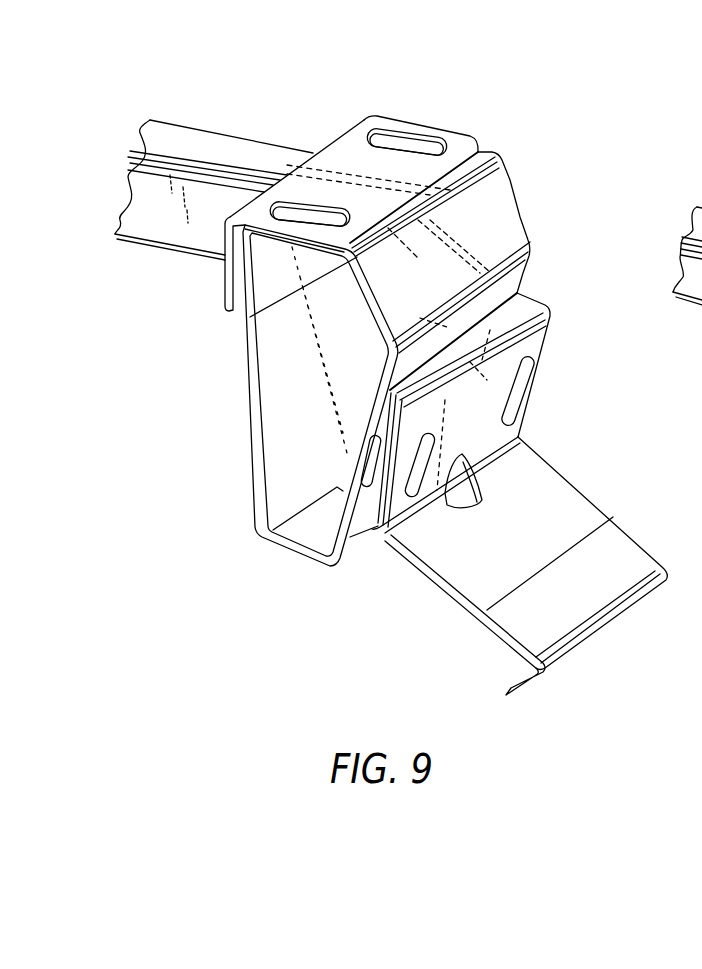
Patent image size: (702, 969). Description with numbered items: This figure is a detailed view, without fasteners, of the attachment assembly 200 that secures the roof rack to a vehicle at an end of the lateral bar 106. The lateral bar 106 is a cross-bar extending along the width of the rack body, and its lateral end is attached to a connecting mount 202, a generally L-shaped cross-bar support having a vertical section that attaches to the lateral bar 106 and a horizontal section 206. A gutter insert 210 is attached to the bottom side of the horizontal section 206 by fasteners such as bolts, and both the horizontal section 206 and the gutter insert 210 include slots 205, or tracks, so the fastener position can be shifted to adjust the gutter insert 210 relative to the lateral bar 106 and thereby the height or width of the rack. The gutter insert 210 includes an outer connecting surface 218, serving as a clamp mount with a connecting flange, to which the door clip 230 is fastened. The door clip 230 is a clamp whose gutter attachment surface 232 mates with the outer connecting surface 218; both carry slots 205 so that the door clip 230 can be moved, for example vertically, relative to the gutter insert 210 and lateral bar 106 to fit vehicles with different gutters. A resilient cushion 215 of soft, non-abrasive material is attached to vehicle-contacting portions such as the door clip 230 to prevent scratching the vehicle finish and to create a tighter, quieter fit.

The lateral bar 106 is at (197, 137).
The attachment assembly 200 is at (566, 84).
The connecting mount 202 is at (328, 160).
The slots 205 is at (283, 203).
The horizontal section 206 is at (380, 123).
The gutter insert 210 is at (521, 176).
The cushion 215 is at (353, 543).
The outer connecting surface 218 is at (518, 270).
The door clip 230 is at (601, 496).
The gutter attachment surface 232 is at (537, 340).